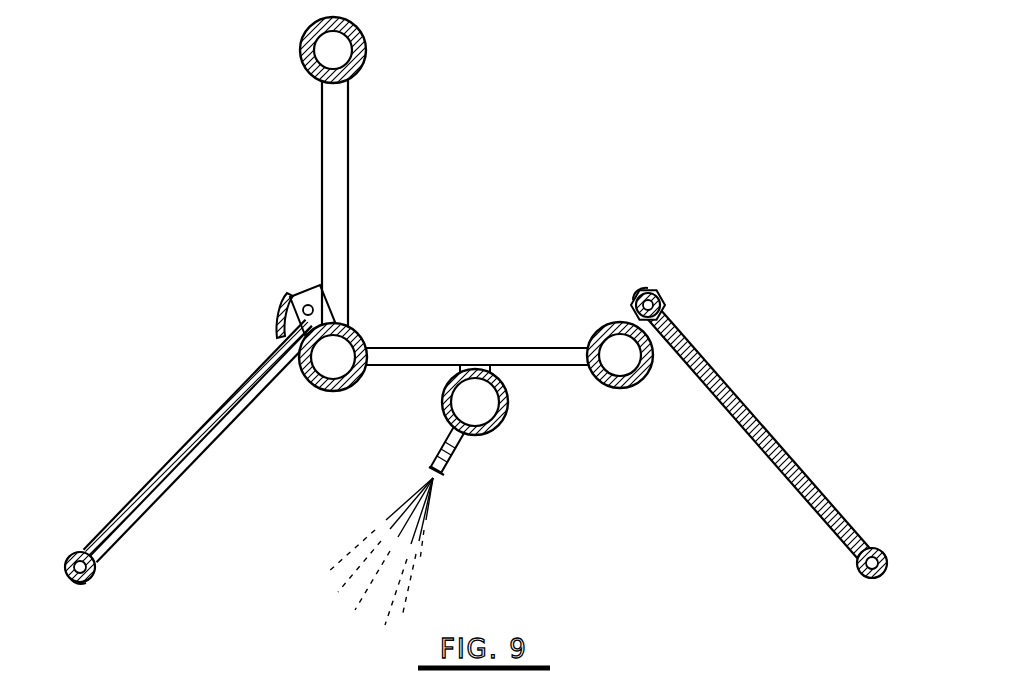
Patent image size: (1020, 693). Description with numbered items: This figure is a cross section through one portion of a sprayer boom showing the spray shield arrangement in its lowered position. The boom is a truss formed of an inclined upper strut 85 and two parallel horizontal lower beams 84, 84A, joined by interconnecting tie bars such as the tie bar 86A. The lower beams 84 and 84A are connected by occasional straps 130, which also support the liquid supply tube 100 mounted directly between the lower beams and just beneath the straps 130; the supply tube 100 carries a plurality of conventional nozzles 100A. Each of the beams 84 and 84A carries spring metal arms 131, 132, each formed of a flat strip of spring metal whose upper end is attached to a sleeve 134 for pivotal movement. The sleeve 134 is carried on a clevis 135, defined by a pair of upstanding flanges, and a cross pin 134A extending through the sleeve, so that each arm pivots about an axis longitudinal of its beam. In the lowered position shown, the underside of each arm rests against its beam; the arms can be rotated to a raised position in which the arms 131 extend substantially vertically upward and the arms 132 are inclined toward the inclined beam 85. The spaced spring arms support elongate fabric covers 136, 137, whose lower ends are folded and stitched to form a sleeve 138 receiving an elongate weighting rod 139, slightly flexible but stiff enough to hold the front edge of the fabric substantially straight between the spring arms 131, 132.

The lower beam 84 is at (333, 391).
The lower beam 84A is at (628, 389).
The inclined upper strut 85 is at (298, 27).
The tie bar 86A is at (346, 183).
The liquid supply tube 100 is at (509, 418).
The nozzle 100A is at (459, 453).
The strap 130 is at (434, 347).
The spring metal arm 131 is at (210, 423).
The spring metal arm 132 is at (759, 434).
The sleeve 134 is at (666, 317).
The cross pin 134A is at (661, 290).
The clevis 135 is at (642, 292).
The fabric cover 136 is at (207, 410).
The fabric cover 137 is at (768, 418).
The sleeve 138 is at (97, 562).
The weighting rod 139 is at (83, 585).